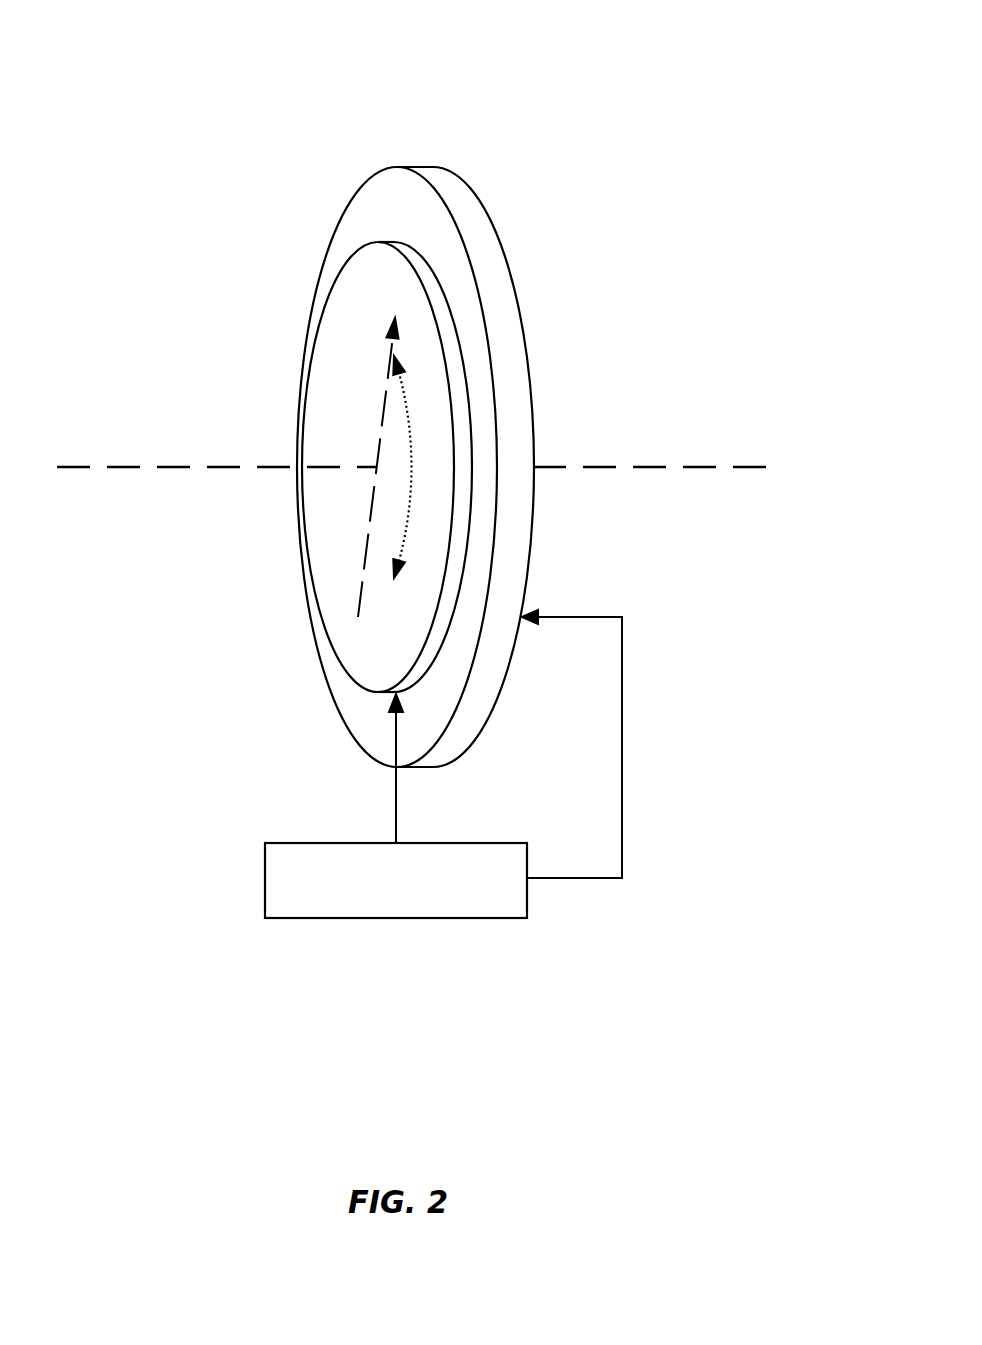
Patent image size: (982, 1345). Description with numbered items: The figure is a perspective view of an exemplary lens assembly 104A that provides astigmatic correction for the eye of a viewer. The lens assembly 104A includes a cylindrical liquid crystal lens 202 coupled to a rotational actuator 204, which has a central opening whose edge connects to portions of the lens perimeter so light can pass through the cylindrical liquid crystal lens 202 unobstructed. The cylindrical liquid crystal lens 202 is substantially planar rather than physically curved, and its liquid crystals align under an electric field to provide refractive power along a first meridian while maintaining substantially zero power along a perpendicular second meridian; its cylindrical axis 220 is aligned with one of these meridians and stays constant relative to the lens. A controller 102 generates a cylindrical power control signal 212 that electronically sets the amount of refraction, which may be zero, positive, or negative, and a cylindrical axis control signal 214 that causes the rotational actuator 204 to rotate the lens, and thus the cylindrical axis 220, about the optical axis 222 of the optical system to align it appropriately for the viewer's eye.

The lens assembly 104A is at (264, 132).
The cylindrical liquid crystal lens 202 is at (317, 453).
The rotational actuator 204 is at (472, 467).
The cylindrical axis 220 is at (258, 495).
The optical axis 222 is at (435, 418).
The controller 102 is at (396, 880).
The cylindrical power control signal 212 is at (235, 772).
The cylindrical axis control signal 214 is at (655, 744).